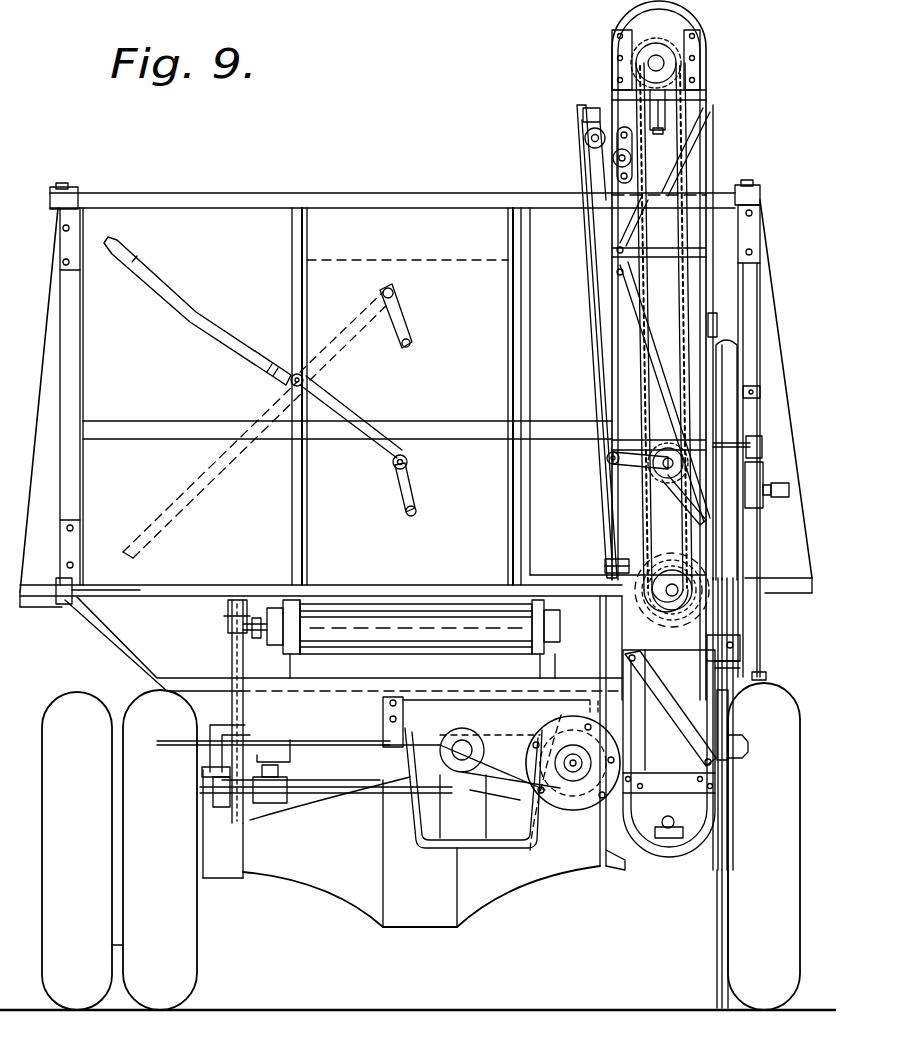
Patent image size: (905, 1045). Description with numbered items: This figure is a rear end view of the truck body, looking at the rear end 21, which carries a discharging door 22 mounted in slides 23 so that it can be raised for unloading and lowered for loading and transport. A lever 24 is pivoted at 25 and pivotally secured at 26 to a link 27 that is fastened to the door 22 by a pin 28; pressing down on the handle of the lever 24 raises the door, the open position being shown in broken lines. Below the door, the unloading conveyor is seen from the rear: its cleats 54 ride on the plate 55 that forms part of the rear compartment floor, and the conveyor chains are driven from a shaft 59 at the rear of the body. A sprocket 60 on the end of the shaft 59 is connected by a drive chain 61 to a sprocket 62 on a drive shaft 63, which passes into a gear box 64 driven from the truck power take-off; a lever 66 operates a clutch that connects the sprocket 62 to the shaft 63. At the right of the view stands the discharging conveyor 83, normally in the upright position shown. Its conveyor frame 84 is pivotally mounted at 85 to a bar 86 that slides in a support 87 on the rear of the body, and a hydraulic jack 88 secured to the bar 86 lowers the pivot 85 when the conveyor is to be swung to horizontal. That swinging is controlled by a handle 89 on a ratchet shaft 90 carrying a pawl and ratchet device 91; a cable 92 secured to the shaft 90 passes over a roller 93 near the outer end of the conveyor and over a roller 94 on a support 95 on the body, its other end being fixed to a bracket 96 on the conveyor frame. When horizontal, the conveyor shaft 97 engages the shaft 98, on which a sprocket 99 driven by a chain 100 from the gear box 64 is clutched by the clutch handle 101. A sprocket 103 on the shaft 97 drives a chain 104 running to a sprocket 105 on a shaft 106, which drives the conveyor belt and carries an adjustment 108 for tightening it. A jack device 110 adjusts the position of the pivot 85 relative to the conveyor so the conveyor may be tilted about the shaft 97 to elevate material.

The rear end 21 is at (247, 214).
The discharging door 22 is at (440, 262).
The slides 23 is at (308, 300).
The lever 24 is at (212, 322).
The pivot 25 is at (292, 372).
The pivotal connection 26 is at (407, 462).
The link 27 is at (410, 488).
The pin 28 is at (420, 511).
The cleats 54 is at (372, 612).
The plate 55 is at (470, 612).
The shaft 59 is at (256, 625).
The sprocket 60 is at (232, 610).
The drive chain 61 is at (232, 660).
The sprocket 62 is at (258, 804).
The drive shaft 63 is at (330, 786).
The gear box 64 is at (478, 810).
The lever 66 is at (202, 768).
The discharging conveyor 83 is at (712, 108).
The conveyor frame 84 is at (702, 286).
The pivot 85 is at (745, 646).
The bar 86 is at (730, 614).
The support 87 is at (735, 362).
The hydraulic jack 88 is at (762, 462).
The handle 89 is at (602, 463).
The ratchet shaft 90 is at (658, 470).
The pawl and ratchet device 91 is at (676, 478).
The cable 92 is at (597, 284).
The roller 93 is at (620, 158).
The roller 94 is at (596, 136).
The support 95 is at (588, 112).
The bracket 96 is at (605, 565).
The shaft 97 is at (664, 598).
The shaft 98 is at (574, 768).
The sprocket 99 is at (530, 850).
The chain 100 is at (494, 735).
The clutch handle 101 is at (160, 742).
The sprocket 103 is at (655, 578).
The chain 104 is at (642, 378).
The sprocket 105 is at (678, 68).
The shaft 106 is at (672, 52).
The adjustment 108 is at (692, 108).
The jack device 110 is at (745, 736).